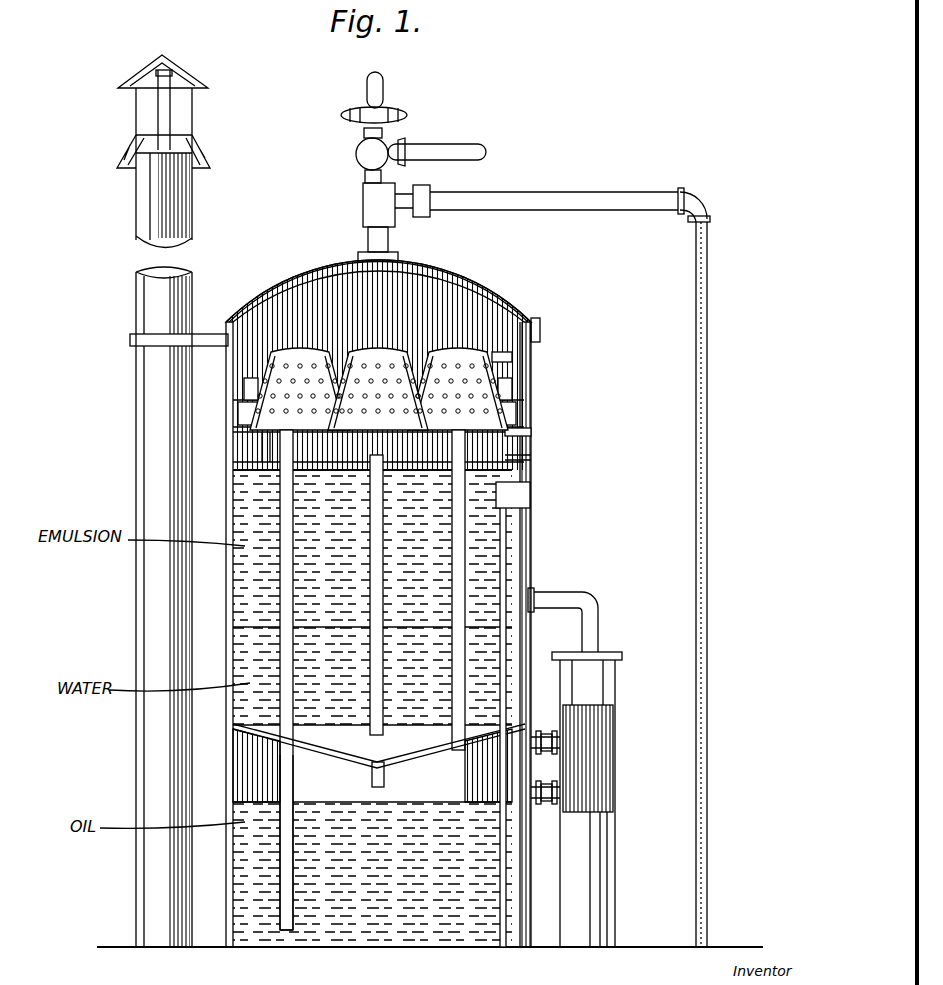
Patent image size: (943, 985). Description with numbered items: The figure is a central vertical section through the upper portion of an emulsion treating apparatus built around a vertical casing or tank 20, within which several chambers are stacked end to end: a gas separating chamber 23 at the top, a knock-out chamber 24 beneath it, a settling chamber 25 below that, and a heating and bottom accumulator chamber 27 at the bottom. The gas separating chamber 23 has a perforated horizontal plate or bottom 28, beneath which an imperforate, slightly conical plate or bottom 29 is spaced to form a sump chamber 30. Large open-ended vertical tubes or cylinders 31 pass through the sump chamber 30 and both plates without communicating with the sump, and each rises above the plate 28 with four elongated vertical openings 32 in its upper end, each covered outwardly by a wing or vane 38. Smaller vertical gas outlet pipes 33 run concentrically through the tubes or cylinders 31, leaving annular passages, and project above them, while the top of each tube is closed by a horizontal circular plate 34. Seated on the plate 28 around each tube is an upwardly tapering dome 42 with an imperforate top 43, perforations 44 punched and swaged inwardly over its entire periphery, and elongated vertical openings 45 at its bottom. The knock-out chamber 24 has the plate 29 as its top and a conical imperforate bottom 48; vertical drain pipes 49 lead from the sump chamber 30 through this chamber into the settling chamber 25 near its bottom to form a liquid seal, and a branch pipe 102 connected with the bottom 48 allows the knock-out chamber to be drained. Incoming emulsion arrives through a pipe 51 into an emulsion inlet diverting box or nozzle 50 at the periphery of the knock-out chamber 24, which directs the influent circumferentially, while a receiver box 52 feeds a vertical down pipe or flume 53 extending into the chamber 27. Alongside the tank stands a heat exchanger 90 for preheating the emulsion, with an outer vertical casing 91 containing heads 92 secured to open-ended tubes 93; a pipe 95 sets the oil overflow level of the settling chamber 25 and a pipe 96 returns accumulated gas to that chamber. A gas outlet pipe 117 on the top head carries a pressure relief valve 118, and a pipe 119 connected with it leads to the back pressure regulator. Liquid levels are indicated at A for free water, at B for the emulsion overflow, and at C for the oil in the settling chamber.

The vertical casing or tank 20 is at (531, 548).
The gas separating chamber 23 is at (500, 358).
The knock-out chamber 24 is at (512, 540).
The settling chamber 25 is at (312, 895).
The heating and bottom accumulator chamber 27 is at (470, 288).
The horizontal plate or bottom 28 is at (531, 432).
The plate or bottom 29 is at (515, 458).
The sump chamber 30 is at (512, 445).
The vertical tubes or cylinders 31 is at (372, 597).
The elongated vertical openings 32 is at (238, 414).
The vertical gas outlet pipes 33 is at (296, 580).
The horizontal circular plate 34 is at (245, 380).
The wing or vane 38 is at (262, 448).
The dome 42 is at (385, 350).
The imperforate top 43 is at (335, 344).
The perforations 44 is at (295, 352).
The elongated vertical openings 45 is at (262, 432).
The imperforate bottom 48 is at (345, 752).
The vertical drain pipes 49 is at (300, 866).
The emulsion inlet diverting box or nozzle 50 is at (520, 604).
The pipe 51 is at (600, 622).
The receiver box 52 is at (522, 496).
The vertical down pipe or flume 53 is at (505, 888).
The heat exchanger 90 is at (607, 799).
The outer vertical casing 91 is at (606, 872).
The heads 92 is at (590, 710).
The open ended tubes 93 is at (600, 765).
The pipe 95 is at (530, 795).
The pipe 96 is at (525, 748).
The branch pipe 102 is at (388, 772).
The gas outlet pipe 117 is at (368, 240).
The pressure relief valve 118 is at (380, 152).
The pipe 119 is at (708, 450).
The free water level A is at (335, 622).
The emulsion overflow level B is at (324, 478).
The oil level C is at (340, 800).